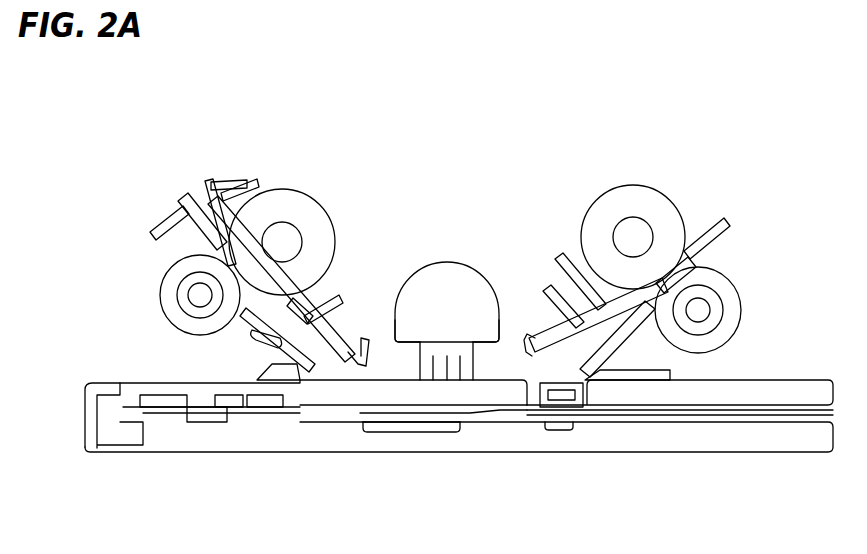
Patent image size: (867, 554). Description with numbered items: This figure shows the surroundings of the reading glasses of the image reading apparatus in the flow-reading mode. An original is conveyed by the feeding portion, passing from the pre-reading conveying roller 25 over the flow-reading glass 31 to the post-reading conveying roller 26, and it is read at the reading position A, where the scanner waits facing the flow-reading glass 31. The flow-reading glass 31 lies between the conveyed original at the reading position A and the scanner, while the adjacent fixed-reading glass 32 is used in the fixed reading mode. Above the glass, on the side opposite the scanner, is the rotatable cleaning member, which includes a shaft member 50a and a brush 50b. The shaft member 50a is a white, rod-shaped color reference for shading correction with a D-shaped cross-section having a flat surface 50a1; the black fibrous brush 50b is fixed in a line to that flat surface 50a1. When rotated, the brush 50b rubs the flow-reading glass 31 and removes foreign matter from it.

The pre-reading conveying roller 25 is at (300, 200).
The post-reading conveying roller 26 is at (610, 200).
The shaft member 50a is at (435, 272).
The flat surface 50a1 is at (397, 350).
The brush 50b is at (498, 347).
The flow-reading glass 31 is at (343, 452).
The fixed-reading glass 32 is at (727, 405).
The reading position A is at (447, 447).